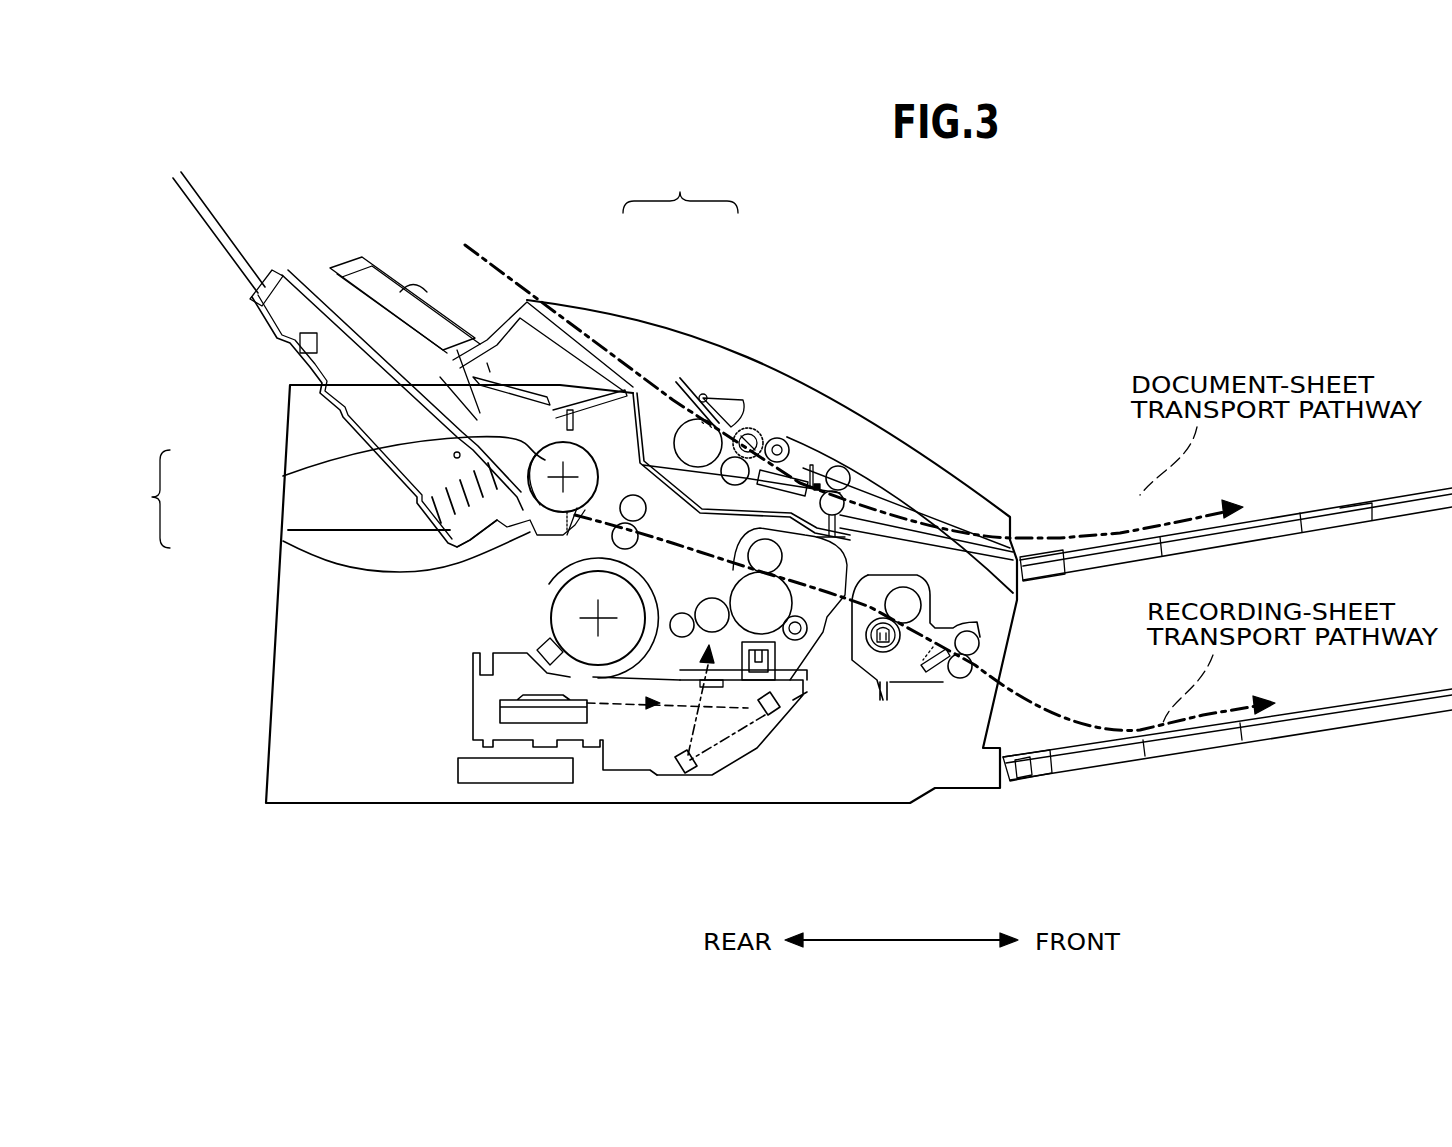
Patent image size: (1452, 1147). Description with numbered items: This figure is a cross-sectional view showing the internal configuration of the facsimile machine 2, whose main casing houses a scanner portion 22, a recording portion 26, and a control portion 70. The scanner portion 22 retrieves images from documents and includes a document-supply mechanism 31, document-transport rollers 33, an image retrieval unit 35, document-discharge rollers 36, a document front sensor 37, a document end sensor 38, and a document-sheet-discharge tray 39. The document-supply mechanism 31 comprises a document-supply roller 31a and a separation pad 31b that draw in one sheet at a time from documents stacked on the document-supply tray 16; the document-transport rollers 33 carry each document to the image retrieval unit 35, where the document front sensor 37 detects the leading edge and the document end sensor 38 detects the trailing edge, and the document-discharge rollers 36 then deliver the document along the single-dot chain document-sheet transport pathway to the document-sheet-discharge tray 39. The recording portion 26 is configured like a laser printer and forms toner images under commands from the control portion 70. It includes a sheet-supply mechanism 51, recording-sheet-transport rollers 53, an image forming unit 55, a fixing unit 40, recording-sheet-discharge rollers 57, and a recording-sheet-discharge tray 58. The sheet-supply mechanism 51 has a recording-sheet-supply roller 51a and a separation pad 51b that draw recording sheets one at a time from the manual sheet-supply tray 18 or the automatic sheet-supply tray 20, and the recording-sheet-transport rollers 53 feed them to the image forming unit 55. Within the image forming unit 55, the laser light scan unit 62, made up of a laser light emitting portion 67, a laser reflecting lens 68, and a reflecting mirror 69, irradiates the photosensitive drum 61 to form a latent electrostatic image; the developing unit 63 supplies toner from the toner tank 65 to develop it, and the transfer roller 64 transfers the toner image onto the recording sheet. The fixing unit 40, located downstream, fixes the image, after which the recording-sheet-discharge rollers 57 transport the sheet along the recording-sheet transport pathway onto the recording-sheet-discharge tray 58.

The facsimile machine 2 is at (1238, 229).
The document-supply tray 16 is at (303, 297).
The manual sheet-supply tray 18 is at (423, 295).
The automatic sheet-supply tray 20 is at (572, 310).
The scanner portion 22 is at (853, 426).
The recording portion 26 is at (430, 720).
The document-supply mechanism 31 is at (680, 190).
The document-supply roller 31a is at (665, 425).
The separation pad 31b is at (668, 405).
The document-transport rollers 33 is at (777, 432).
The image retrieval unit 35 is at (811, 463).
The document-discharge rollers 36 is at (845, 487).
The document front sensor 37 is at (707, 430).
The document end sensor 38 is at (800, 455).
The document-sheet-discharge tray 39 is at (1287, 503).
The fixing unit 40 is at (885, 655).
The sheet-supply mechanism 51 is at (285, 499).
The recording-sheet-supply roller 51a is at (283, 476).
The separation pad 51b is at (283, 541).
The recording-sheet-transport rollers 53 is at (555, 538).
The image forming unit 55 is at (500, 612).
The recording-sheet-discharge rollers 57 is at (957, 680).
The recording-sheet-discharge tray 58 is at (1273, 733).
The photosensitive drum 61 is at (767, 627).
The laser light scan unit 62 is at (768, 700).
The developing unit 63 is at (740, 760).
The transfer roller 64 is at (770, 557).
The toner tank 65 is at (603, 660).
The laser light emitting portion 67 is at (500, 712).
The laser reflecting lens 68 is at (775, 718).
The reflecting mirror 69 is at (672, 770).
The control portion 70 is at (485, 790).